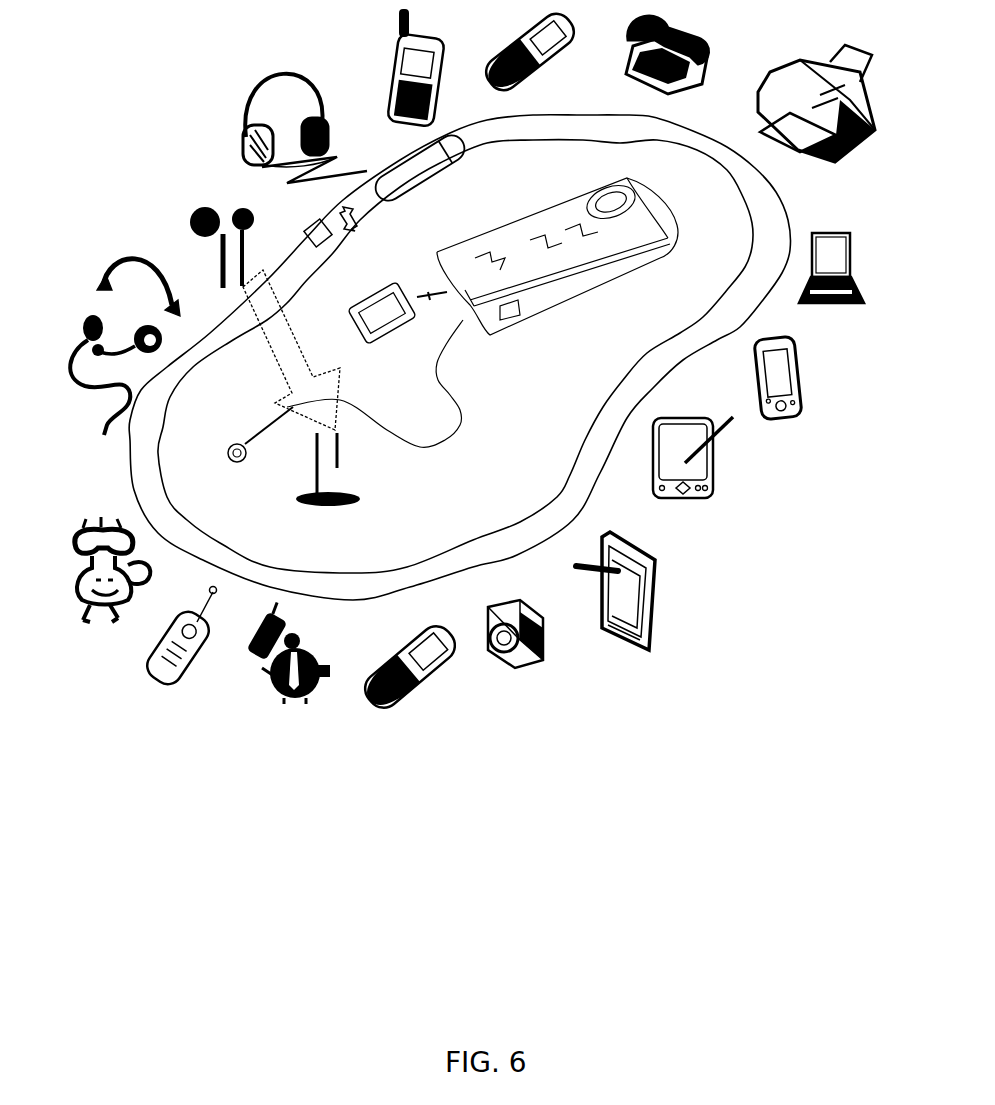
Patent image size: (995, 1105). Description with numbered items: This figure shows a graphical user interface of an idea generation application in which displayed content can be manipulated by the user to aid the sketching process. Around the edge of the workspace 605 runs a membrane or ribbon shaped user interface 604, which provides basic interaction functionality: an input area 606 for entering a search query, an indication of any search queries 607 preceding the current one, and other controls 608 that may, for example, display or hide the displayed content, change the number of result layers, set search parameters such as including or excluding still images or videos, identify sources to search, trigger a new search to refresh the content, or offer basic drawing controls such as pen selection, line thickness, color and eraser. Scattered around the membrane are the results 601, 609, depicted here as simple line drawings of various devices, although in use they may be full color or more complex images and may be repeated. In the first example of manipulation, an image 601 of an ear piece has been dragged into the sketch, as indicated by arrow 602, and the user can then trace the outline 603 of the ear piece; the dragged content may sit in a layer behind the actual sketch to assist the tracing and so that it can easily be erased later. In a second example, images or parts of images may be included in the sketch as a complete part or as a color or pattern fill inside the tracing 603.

The image 601 is at (195, 212).
The arrow 602 is at (295, 362).
The outline 603 is at (307, 493).
The membrane or ribbon shaped user interface 604 is at (517, 555).
The workspace 605 is at (455, 356).
The input area 606 is at (413, 187).
The indication of search queries 607 is at (543, 138).
The controls 608 is at (353, 227).
The results 609 is at (393, 39).